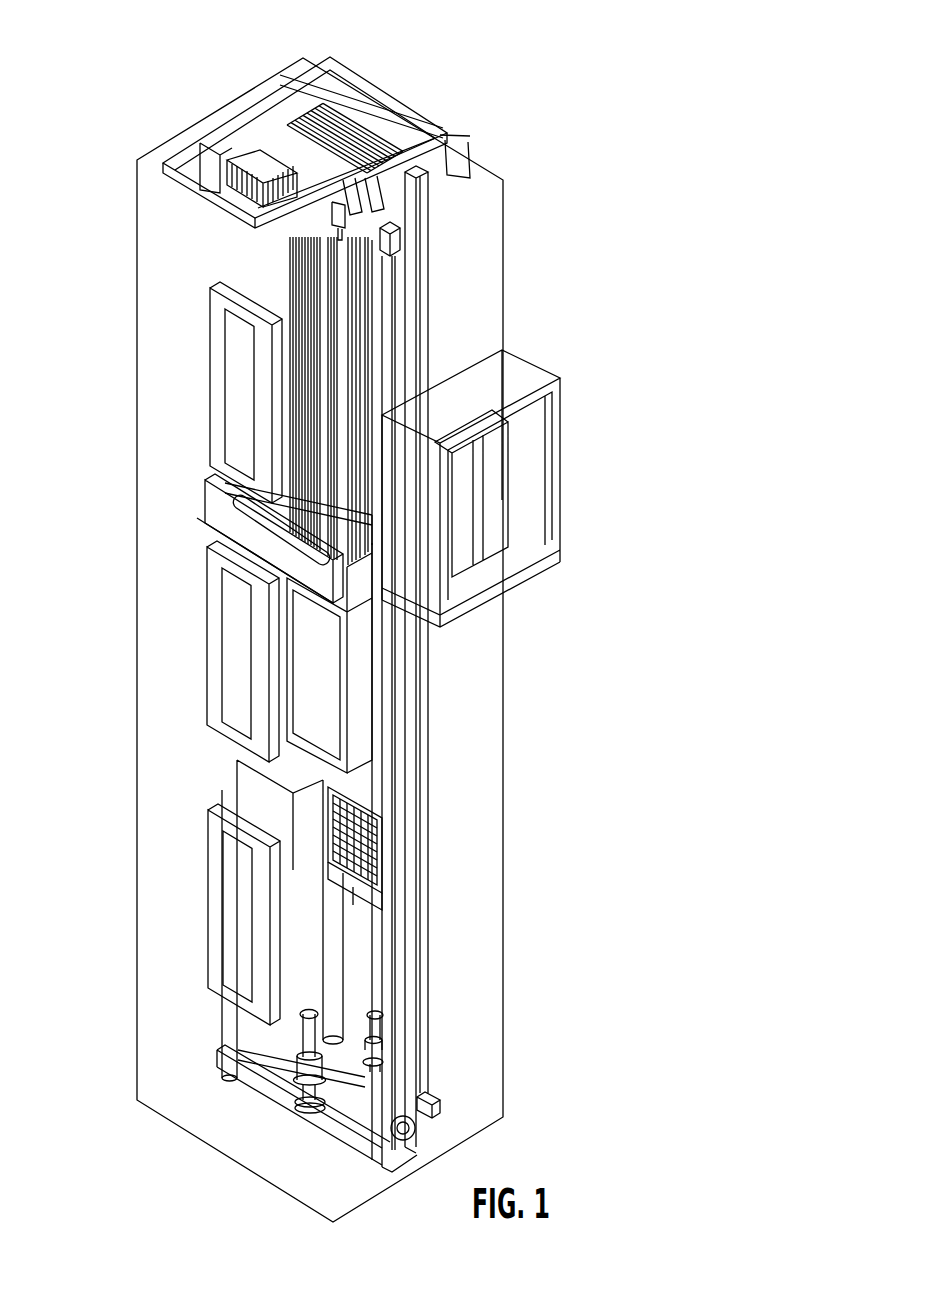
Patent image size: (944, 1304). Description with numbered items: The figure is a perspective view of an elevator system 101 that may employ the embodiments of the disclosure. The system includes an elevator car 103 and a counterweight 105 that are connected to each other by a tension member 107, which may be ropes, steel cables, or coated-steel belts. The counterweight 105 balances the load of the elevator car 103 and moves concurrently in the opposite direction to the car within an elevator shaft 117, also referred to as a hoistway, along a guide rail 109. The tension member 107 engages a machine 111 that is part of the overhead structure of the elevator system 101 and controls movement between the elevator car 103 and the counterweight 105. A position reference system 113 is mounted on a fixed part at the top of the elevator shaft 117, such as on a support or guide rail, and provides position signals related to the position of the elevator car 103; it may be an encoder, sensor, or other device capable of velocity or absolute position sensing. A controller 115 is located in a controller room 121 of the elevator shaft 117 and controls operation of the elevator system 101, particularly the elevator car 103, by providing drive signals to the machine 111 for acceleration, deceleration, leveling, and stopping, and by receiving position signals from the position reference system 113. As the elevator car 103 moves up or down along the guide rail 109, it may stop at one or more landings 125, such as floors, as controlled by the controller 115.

The elevator system 101 is at (520, 117).
The elevator car 103 is at (325, 688).
The counterweight 105 is at (380, 860).
The tension member 107 is at (330, 388).
The guide rail 109 is at (400, 775).
The machine 111 is at (240, 150).
The position reference system 113 is at (393, 238).
The controller 115 is at (503, 493).
The elevator shaft 117 is at (186, 778).
The controller room 121 is at (560, 378).
The landing 125 is at (205, 375).